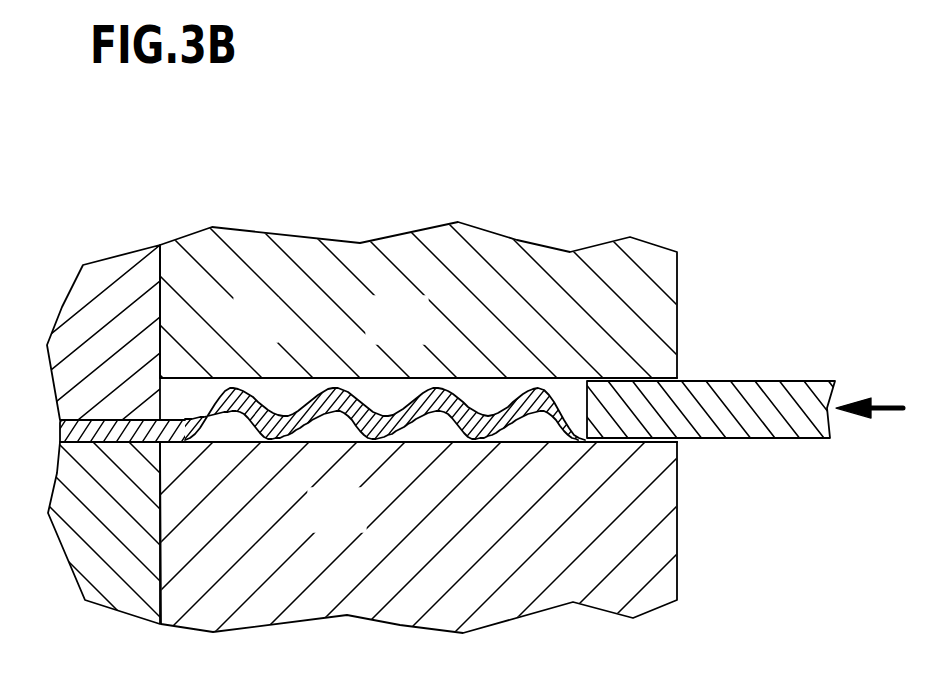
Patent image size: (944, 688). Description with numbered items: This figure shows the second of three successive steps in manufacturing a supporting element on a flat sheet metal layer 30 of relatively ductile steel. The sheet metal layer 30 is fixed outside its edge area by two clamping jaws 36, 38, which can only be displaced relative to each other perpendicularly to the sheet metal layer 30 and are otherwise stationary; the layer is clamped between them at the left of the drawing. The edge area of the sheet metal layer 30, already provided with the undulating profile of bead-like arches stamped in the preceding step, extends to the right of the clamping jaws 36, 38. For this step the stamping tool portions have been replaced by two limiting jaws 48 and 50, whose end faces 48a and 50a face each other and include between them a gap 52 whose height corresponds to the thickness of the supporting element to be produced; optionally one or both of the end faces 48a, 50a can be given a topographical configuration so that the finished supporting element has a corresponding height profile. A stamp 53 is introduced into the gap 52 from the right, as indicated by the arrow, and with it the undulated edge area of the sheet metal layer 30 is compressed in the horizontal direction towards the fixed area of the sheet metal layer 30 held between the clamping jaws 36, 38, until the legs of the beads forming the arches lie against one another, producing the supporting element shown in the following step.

The sheet metal layer 30 is at (60, 427).
The clamping jaw 36 is at (120, 272).
The clamping jaw 38 is at (120, 590).
The limiting jaw 48 is at (607, 263).
The end face 48a is at (397, 386).
The limiting jaw 50 is at (605, 592).
The end face 50a is at (336, 430).
The gap 52 is at (285, 402).
The stamp 53 is at (748, 388).